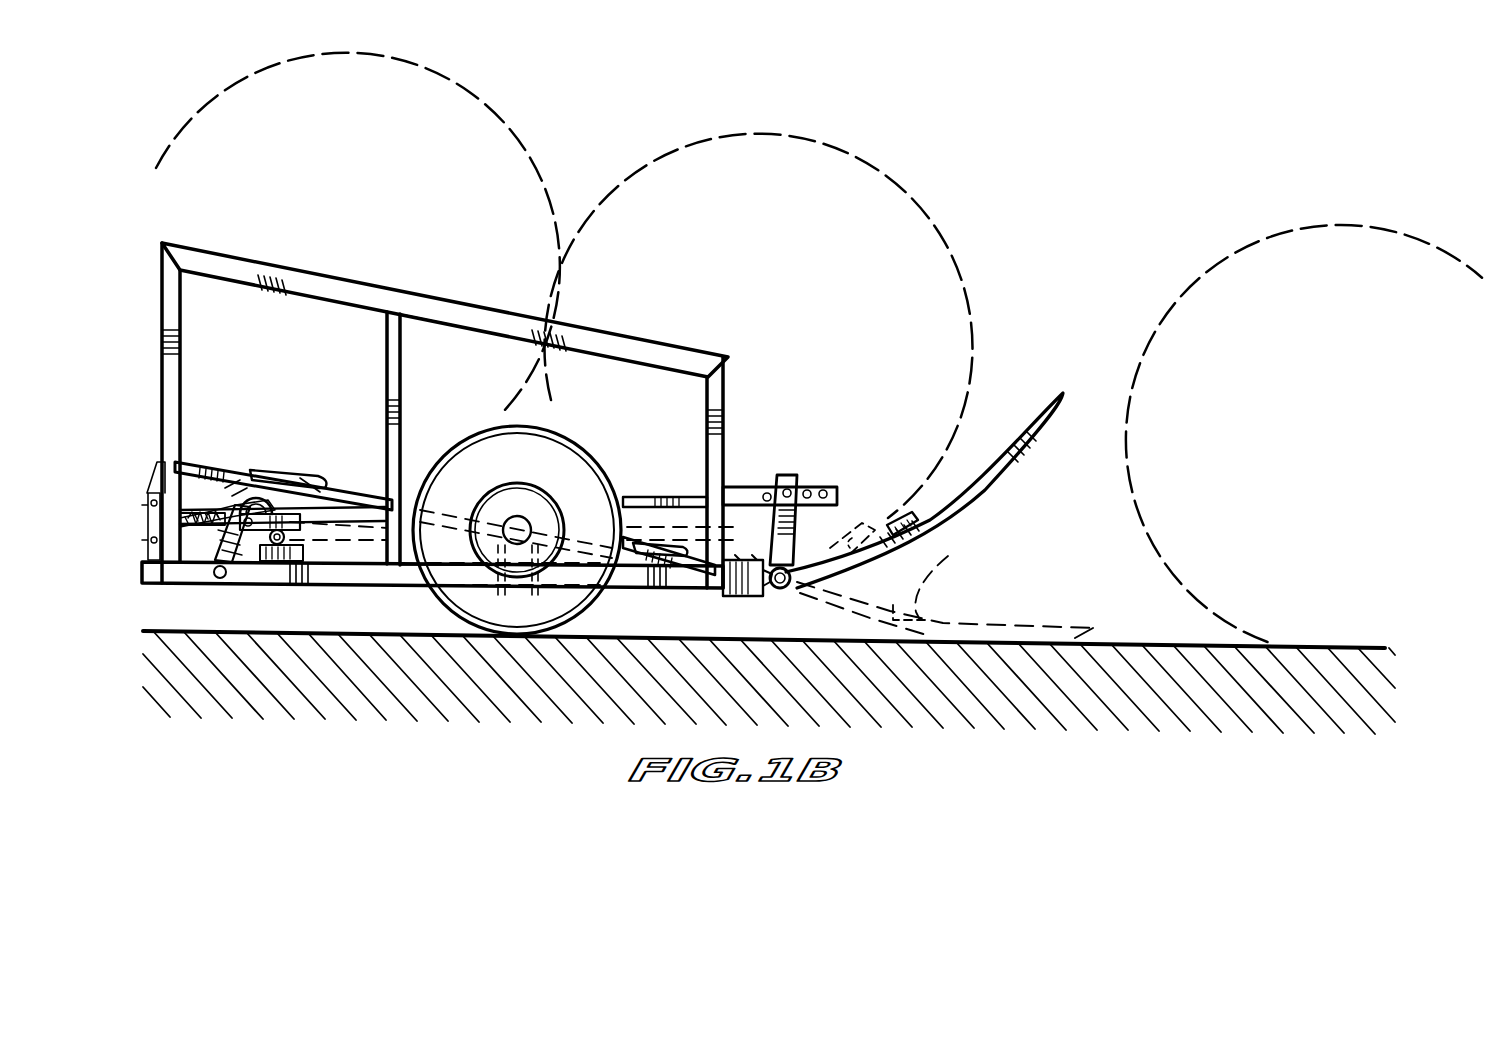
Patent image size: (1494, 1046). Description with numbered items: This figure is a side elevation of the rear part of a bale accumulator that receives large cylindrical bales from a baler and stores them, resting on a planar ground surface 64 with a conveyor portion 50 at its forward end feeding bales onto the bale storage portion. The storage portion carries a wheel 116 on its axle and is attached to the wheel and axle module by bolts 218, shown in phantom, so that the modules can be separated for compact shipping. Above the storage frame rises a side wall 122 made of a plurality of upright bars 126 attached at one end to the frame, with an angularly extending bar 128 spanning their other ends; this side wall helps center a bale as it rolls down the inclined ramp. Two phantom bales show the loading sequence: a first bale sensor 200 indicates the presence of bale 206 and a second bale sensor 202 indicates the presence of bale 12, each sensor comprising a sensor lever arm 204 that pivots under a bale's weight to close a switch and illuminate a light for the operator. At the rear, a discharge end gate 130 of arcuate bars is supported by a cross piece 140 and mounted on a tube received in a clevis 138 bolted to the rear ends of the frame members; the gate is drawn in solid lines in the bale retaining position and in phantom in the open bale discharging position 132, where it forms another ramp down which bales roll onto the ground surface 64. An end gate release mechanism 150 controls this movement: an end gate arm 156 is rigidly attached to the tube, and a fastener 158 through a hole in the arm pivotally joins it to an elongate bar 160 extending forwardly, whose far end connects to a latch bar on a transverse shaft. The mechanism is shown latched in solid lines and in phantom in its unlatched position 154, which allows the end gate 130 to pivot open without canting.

The bale 12 is at (478, 96).
The bale 206 is at (893, 180).
The angularly extending bar 128 is at (338, 268).
The side wall 122 is at (612, 330).
The upright bars 126 is at (387, 358).
The elongate bar 160 is at (733, 482).
The conveyor portion 50 is at (313, 588).
The bale accumulator wheel 116 is at (563, 437).
The bolts 218 is at (500, 593).
The second bale sensor 202 is at (292, 466).
The sensor lever arm 204 is at (298, 478).
The first bale sensor 200 is at (648, 537).
The end gate release mechanism 150 is at (797, 436).
The fastener 158 is at (802, 487).
The end gate arm 156 is at (803, 487).
The clevis 138 is at (775, 590).
The unlatched position 154 is at (865, 522).
The discharge end gate 130 is at (1027, 461).
The cross piece 140 is at (917, 527).
The open bale discharging position 132 is at (1022, 628).
The ground surface 64 is at (680, 634).